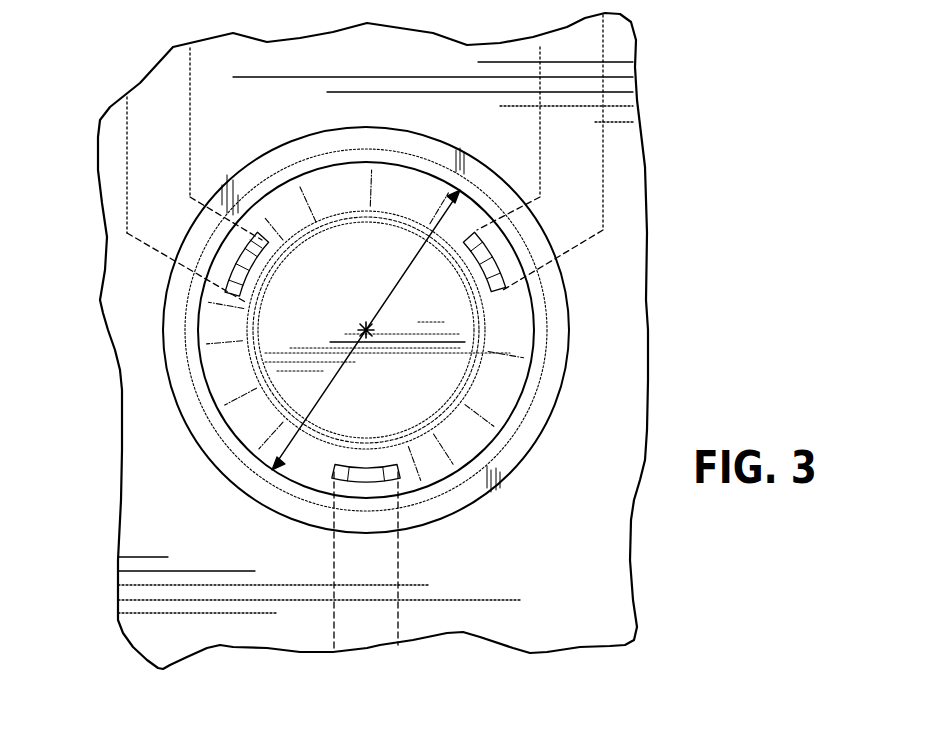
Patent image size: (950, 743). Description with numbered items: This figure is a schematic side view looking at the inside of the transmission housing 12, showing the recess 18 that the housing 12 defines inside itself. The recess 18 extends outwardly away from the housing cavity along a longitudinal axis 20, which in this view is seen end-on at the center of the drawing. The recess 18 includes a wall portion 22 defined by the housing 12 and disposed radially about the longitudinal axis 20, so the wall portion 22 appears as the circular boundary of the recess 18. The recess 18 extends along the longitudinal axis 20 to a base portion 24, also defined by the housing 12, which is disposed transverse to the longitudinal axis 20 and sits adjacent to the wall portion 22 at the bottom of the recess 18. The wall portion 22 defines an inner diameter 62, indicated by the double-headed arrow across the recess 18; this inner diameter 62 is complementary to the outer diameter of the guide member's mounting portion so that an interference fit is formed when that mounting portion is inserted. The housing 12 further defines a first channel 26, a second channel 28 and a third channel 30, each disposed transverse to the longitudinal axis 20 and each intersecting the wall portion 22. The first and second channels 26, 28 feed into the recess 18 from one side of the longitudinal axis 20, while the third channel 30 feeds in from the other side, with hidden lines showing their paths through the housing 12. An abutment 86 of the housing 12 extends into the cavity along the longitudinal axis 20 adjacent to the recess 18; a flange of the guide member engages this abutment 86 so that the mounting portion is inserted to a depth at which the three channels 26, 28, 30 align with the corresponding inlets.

The housing 12 is at (617, 342).
The recess 18 is at (257, 434).
The longitudinal axis 20 is at (373, 322).
The wall portion 22 is at (478, 437).
The base portion 24 is at (337, 233).
The first channel 26 is at (483, 273).
The second channel 28 is at (247, 262).
The third channel 30 is at (362, 473).
The inner diameter 62 is at (450, 200).
The abutment 86 is at (363, 132).